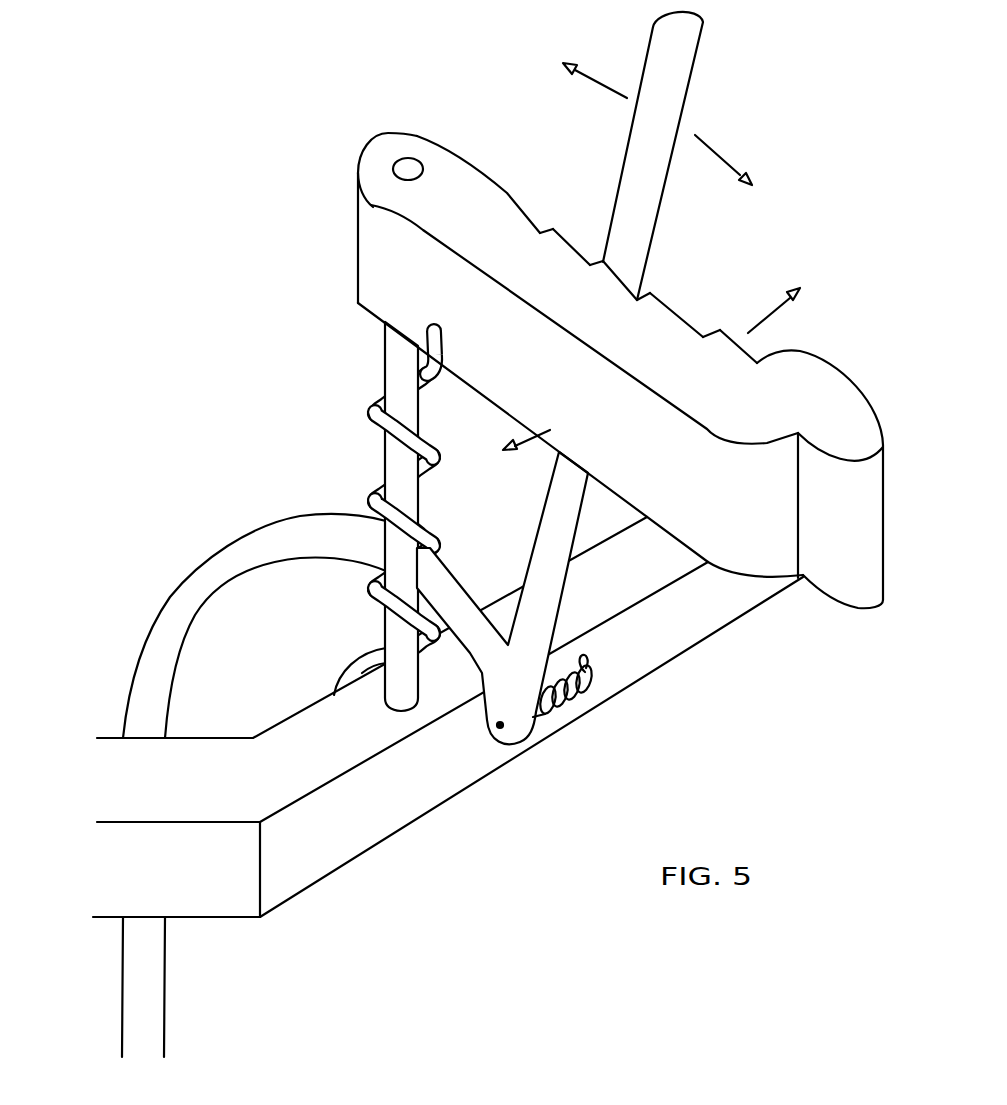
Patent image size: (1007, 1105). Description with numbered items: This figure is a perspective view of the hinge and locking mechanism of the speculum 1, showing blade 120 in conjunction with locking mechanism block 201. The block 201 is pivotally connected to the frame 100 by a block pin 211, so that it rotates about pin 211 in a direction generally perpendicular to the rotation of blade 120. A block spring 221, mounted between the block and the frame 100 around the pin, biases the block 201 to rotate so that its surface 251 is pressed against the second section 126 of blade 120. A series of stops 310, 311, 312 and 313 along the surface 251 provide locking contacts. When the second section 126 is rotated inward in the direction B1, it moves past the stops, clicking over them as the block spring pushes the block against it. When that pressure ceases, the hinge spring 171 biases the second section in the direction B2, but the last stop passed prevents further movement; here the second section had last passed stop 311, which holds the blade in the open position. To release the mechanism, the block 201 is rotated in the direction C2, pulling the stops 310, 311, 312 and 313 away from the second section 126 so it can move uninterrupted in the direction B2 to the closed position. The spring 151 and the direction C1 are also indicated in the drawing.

The assembly 1 is at (488, 534).
The frame 100 is at (347, 850).
The blade 120 is at (231, 570).
The second section 126 is at (685, 67).
The spring 151 is at (593, 683).
The hinge spring 171 is at (560, 705).
The block 201 is at (576, 352).
The block pin 211 is at (400, 172).
The block spring 221 is at (371, 409).
The surface 251 is at (553, 228).
The stop 310 is at (716, 332).
The stop 311 is at (655, 278).
The stop 312 is at (596, 262).
The stop 313 is at (583, 175).
The direction B1 is at (596, 79).
The direction B2 is at (727, 160).
The direction C1 is at (785, 313).
The direction C2 is at (520, 458).